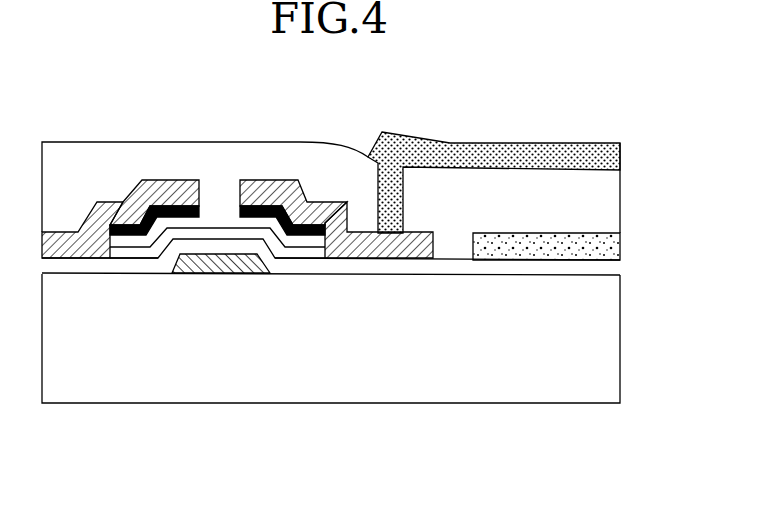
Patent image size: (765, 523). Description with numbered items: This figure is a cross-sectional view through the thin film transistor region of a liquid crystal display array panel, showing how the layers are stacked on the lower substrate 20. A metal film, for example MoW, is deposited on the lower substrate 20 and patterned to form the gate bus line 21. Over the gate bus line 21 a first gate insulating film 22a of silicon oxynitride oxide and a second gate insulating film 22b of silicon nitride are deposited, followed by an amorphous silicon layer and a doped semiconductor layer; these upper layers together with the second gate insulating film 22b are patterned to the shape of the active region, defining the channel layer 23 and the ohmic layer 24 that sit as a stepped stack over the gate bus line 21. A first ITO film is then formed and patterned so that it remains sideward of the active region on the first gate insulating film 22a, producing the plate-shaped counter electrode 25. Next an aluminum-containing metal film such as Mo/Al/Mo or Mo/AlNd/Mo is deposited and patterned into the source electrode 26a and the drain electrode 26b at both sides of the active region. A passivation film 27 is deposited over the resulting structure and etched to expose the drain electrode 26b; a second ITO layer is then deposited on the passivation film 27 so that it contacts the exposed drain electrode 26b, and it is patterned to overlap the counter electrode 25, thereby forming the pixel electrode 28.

The lower substrate 20 is at (603, 345).
The gate bus line 21 is at (226, 265).
The first gate insulating film 22a is at (616, 266).
The second gate insulating film 22b is at (297, 252).
The channel layer 23 is at (215, 222).
The ohmic layer 24 is at (172, 200).
The counter electrode 25 is at (548, 245).
The source electrode 26a is at (125, 213).
The drain electrode 26b is at (325, 208).
The passivation film 27 is at (355, 192).
The pixel electrode 28 is at (470, 197).